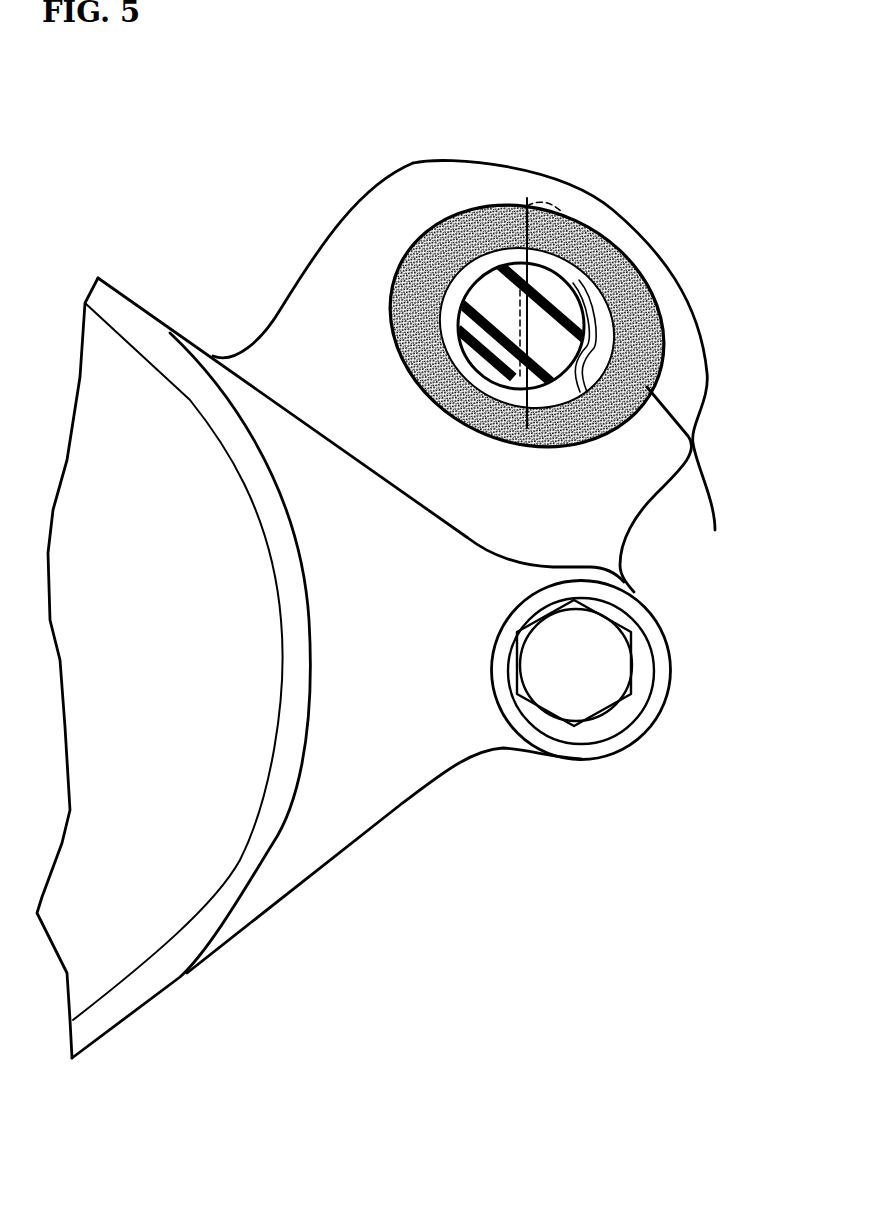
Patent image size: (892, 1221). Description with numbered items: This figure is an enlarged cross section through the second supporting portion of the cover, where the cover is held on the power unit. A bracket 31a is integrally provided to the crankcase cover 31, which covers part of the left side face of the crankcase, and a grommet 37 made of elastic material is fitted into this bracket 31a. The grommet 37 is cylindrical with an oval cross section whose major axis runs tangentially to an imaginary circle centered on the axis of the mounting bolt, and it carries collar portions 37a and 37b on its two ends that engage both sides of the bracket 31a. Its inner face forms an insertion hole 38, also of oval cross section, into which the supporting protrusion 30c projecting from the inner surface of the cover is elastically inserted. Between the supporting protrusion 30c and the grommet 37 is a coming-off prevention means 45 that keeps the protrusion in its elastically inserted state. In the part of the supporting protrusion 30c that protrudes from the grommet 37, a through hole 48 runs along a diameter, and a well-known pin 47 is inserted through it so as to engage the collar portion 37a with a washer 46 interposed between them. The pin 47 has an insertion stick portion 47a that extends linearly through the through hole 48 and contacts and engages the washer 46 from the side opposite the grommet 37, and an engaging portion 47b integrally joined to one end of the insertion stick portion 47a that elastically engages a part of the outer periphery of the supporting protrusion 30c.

The crankcase cover 31 is at (320, 860).
The bracket 31a is at (247, 353).
The supporting protrusion 30c is at (502, 288).
The grommet 37 is at (436, 219).
The collar portion 37a is at (650, 367).
The collar portion 37b is at (648, 292).
The insertion hole 38 is at (597, 310).
The coming-off prevention means 45 is at (592, 357).
The washer 46 is at (397, 267).
The pin 47 is at (425, 395).
The insertion stick portion 47a is at (460, 321).
The engaging portion 47b is at (579, 368).
The through hole 48 is at (497, 440).